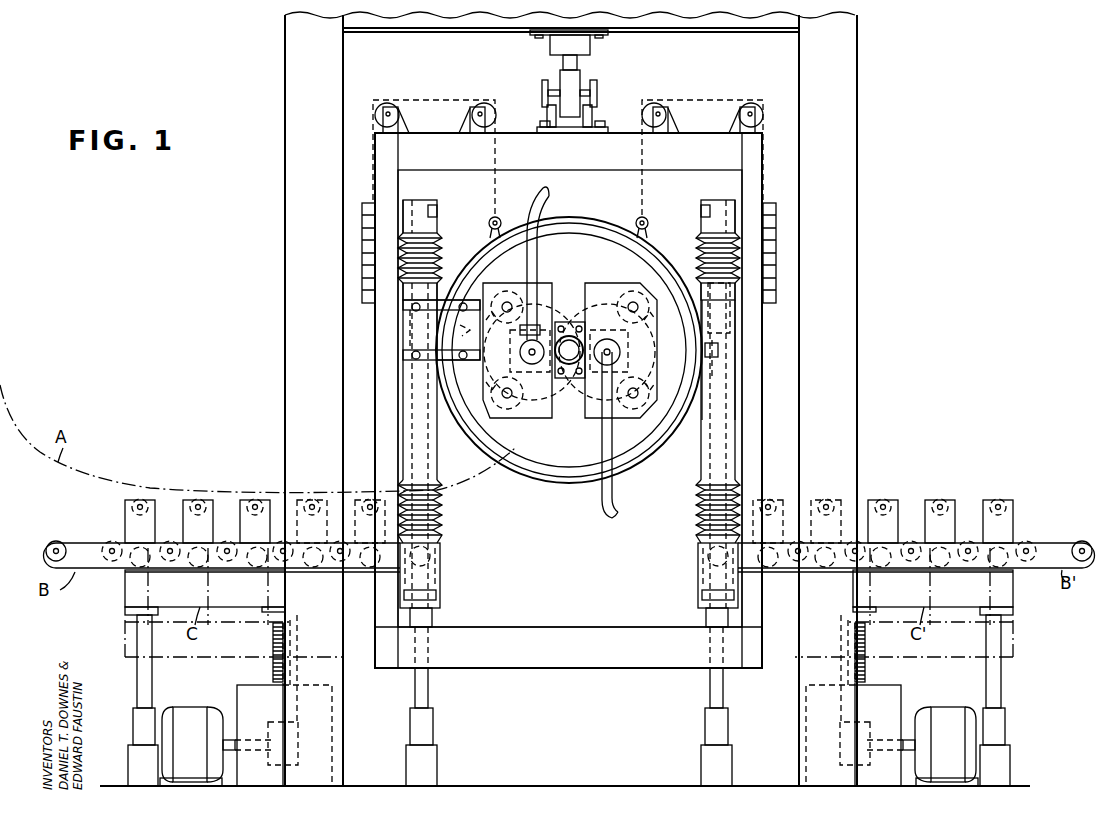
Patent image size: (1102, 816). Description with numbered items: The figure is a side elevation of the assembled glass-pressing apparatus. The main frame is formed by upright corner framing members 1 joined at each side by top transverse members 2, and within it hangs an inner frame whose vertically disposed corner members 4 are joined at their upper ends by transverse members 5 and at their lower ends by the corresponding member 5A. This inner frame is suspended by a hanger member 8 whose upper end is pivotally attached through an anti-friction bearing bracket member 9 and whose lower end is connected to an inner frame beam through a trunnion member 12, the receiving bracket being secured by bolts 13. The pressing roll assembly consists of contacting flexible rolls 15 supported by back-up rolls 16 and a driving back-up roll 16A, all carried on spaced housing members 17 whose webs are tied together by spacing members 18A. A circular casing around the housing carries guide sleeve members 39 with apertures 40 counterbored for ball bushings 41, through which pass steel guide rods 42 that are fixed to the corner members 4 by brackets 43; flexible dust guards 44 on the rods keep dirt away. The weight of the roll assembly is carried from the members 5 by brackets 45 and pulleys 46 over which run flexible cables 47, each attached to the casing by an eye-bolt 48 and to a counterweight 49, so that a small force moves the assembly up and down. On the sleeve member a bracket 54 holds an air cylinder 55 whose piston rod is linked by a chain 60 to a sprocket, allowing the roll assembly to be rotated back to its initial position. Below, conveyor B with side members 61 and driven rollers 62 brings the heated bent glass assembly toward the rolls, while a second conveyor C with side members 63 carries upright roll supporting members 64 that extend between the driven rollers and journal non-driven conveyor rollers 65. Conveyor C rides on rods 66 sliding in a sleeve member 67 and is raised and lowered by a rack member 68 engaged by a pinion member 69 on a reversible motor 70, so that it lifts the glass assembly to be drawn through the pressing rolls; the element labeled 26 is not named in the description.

The upright corner framing members 1 is at (857, 70).
The top transverse members 2 is at (677, 28).
The vertically disposed corner members 4 is at (762, 425).
The transverse inner frame members 5 is at (613, 130).
The bottom transverse inner frame member 5A is at (618, 627).
The hanger member 8 is at (563, 66).
The anti-friction bearing bracket member 9 is at (590, 49).
The trunnion member 12 is at (542, 90).
The bolts 13 is at (595, 134).
The flexible rolls 15 is at (575, 322).
The back-up rolls 16 is at (630, 300).
The driving back-up roll 16A is at (455, 343).
The housing members 17 is at (533, 470).
The spacing members 18A is at (672, 268).
The roller plate 26 is at (525, 305).
The guide sleeve members 39 is at (735, 378).
The apertures 40 is at (735, 346).
The ball bushings 41 is at (735, 303).
The guide rods 42 is at (705, 365).
The brackets 43 is at (405, 190).
The flexible dust guards 44 is at (442, 244).
The brackets 45 is at (468, 120).
The pulleys 46 is at (480, 105).
The flexible cables 47 is at (374, 157).
The eye-bolt 48 is at (490, 222).
The counterweight 49 is at (362, 240).
The bracket 54 is at (433, 362).
The air cylinder 55 is at (405, 338).
The chain 60 is at (541, 405).
The side members 61 is at (95, 568).
The driven rollers 62 is at (62, 542).
The side members 63 is at (168, 607).
The upright roll supporting members 64 is at (125, 520).
The non-driven conveyor rollers 65 is at (198, 500).
The rods 66 is at (137, 683).
The sleeve member 67 is at (133, 722).
The rack member 68 is at (273, 632).
The pinion member 69 is at (268, 730).
The motor 70 is at (569, 746).